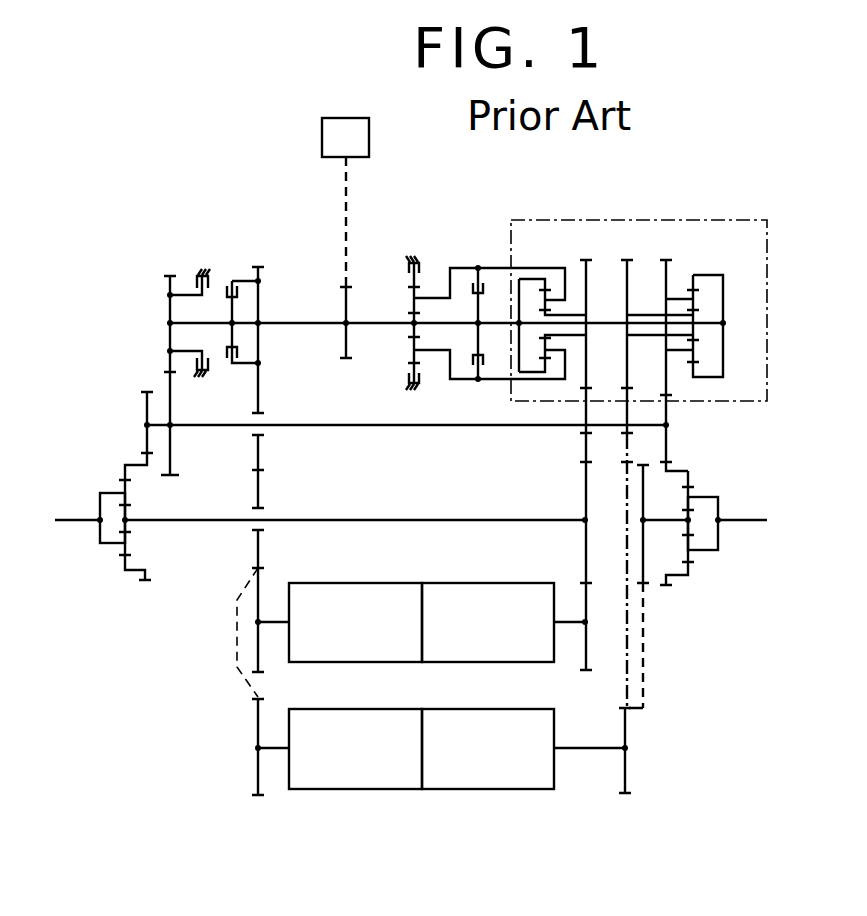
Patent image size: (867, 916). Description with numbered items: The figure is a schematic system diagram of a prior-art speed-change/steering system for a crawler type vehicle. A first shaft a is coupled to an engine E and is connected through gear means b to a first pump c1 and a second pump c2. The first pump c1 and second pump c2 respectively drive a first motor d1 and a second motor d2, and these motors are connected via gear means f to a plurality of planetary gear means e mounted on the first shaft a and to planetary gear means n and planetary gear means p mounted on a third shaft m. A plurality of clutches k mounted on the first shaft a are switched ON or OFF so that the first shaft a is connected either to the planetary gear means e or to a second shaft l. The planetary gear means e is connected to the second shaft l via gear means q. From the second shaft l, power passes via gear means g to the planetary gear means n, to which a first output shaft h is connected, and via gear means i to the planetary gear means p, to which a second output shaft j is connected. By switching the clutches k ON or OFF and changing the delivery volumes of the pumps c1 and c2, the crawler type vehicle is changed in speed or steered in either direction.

The engine E is at (369, 138).
The first shaft a is at (363, 325).
The clutches k is at (197, 283).
The planetary gear means e is at (535, 267).
The gear means f is at (579, 455).
The gear means q is at (671, 411).
The second shaft l is at (462, 427).
The gear means i is at (143, 423).
The planetary gear means p is at (123, 548).
The second output shaft j is at (72, 522).
The third shaft m is at (465, 518).
The gear means b is at (266, 484).
The gear means g is at (700, 470).
The planetary gear means n is at (692, 558).
The first output shaft h is at (740, 519).
The first pump c1 is at (342, 583).
The first motor d1 is at (472, 583).
The second pump c2 is at (340, 789).
The second motor d2 is at (462, 789).